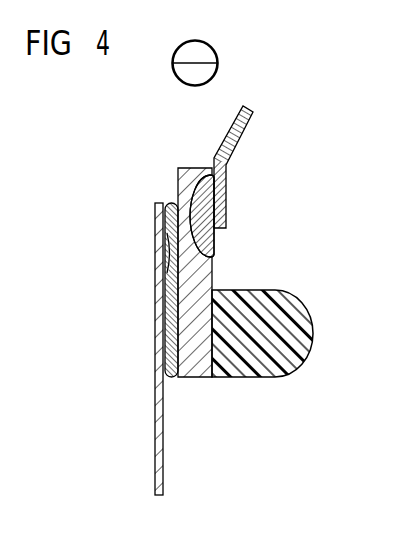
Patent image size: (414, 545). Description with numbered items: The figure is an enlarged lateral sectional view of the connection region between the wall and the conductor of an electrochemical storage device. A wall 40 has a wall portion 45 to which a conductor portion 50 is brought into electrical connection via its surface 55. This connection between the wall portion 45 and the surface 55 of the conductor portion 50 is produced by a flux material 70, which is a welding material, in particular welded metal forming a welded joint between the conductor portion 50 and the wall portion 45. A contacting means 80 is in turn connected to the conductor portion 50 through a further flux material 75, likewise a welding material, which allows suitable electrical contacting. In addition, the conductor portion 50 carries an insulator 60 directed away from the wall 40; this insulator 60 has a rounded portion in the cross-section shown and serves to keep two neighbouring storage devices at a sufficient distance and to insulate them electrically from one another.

The wall 40 is at (160, 467).
The wall portion 45 is at (165, 350).
The conductor portion 50 is at (190, 367).
The surface 55 is at (182, 297).
The insulator 60 is at (297, 328).
The flux material 70 is at (173, 205).
The flux material 75 is at (217, 232).
The contacting means 80 is at (243, 133).